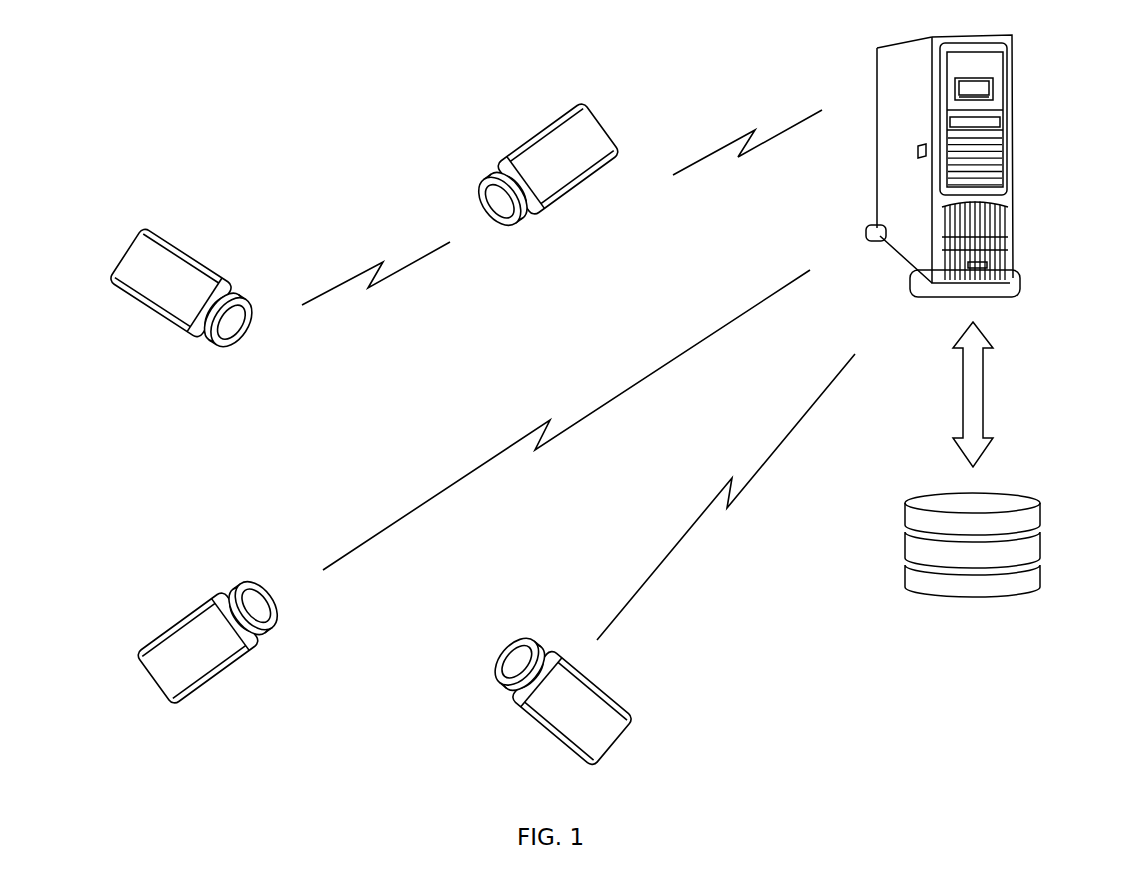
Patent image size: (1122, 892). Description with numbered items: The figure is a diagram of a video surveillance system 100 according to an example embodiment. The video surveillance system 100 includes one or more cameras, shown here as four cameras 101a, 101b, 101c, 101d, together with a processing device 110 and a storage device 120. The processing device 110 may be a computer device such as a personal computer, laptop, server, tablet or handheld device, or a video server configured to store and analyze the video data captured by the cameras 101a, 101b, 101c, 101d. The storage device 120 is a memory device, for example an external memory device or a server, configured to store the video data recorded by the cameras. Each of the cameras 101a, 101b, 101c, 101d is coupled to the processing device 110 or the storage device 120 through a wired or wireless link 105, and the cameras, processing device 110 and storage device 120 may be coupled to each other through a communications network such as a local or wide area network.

The video surveillance system 100 is at (234, 52).
The camera 101a is at (147, 305).
The camera 101b is at (150, 647).
The camera 101c is at (610, 132).
The camera 101d is at (615, 693).
The wired or wireless link 105 is at (363, 268).
The processing device 110 is at (1015, 130).
The storage device 120 is at (1022, 498).